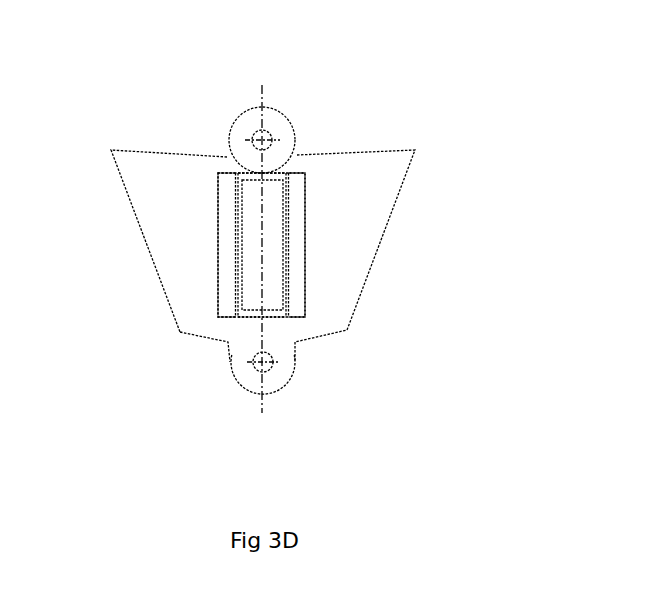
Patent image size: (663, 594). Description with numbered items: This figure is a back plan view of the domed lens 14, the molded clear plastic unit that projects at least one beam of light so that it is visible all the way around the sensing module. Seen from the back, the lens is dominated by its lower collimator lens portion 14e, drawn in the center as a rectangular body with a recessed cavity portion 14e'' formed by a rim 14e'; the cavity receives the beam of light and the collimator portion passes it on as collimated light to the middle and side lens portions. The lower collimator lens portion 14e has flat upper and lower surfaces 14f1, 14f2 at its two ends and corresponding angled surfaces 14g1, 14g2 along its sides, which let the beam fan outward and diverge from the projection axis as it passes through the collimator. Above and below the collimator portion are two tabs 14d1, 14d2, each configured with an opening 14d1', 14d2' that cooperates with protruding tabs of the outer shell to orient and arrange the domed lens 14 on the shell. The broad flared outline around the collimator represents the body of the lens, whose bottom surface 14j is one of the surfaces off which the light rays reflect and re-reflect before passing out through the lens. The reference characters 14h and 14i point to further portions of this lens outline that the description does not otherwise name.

The domed lens 14 is at (510, 95).
The left wing portion 14h is at (195, 152).
The left lower shoulder 14i is at (202, 337).
The bottom surface 14j is at (327, 305).
The tab 14d1 is at (270, 113).
The opening 14d1' is at (329, 85).
The tab 14d2 is at (305, 376).
The opening 14d2' is at (299, 400).
The lower collimator lens portion 14e is at (241, 205).
The rim 14e' is at (371, 245).
The recessed cavity portion 14e'' is at (362, 245).
The angled surface 14g1 is at (293, 268).
The angled surface 14g2 is at (230, 242).
The flat upper surface 14f1 is at (281, 172).
The flat lower surface 14f2 is at (240, 318).